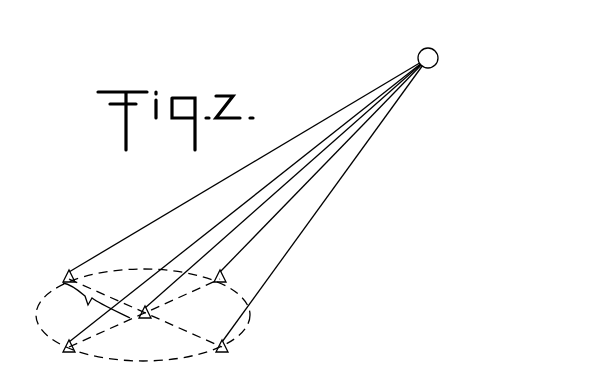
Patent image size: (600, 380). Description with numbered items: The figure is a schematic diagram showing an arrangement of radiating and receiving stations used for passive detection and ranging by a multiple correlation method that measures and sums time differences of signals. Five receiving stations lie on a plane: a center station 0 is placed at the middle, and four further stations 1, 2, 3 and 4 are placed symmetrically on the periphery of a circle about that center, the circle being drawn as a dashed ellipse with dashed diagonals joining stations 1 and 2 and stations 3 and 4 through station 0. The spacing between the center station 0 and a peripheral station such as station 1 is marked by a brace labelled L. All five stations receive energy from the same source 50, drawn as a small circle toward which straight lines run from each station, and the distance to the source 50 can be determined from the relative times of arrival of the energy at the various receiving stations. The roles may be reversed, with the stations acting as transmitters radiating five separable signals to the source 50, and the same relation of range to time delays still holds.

The source 50 is at (437, 53).
The center station 0 is at (283, 197).
The receiving station 1 is at (237, 170).
The receiving station 2 is at (322, 213).
The receiving station 3 is at (241, 215).
The receiving station 4 is at (321, 170).
The distance L is at (96, 303).